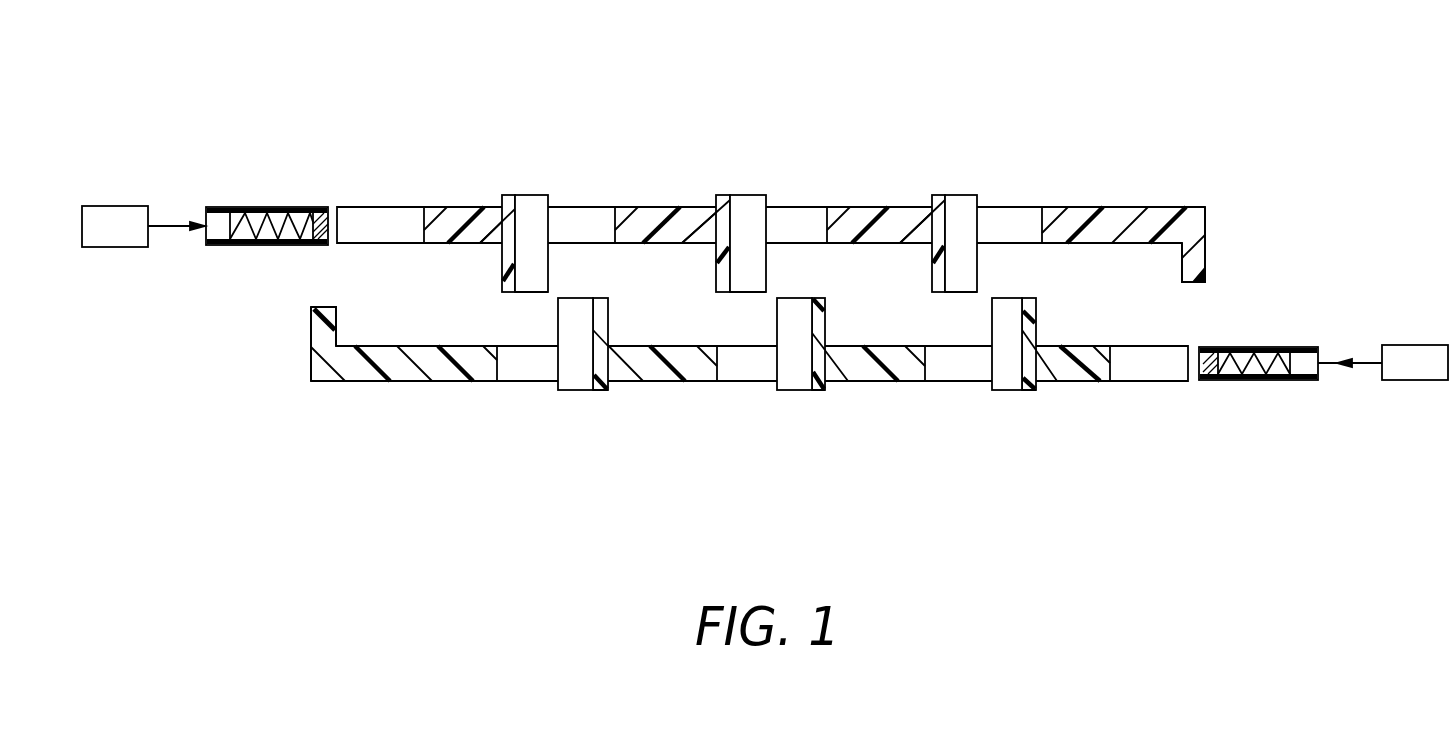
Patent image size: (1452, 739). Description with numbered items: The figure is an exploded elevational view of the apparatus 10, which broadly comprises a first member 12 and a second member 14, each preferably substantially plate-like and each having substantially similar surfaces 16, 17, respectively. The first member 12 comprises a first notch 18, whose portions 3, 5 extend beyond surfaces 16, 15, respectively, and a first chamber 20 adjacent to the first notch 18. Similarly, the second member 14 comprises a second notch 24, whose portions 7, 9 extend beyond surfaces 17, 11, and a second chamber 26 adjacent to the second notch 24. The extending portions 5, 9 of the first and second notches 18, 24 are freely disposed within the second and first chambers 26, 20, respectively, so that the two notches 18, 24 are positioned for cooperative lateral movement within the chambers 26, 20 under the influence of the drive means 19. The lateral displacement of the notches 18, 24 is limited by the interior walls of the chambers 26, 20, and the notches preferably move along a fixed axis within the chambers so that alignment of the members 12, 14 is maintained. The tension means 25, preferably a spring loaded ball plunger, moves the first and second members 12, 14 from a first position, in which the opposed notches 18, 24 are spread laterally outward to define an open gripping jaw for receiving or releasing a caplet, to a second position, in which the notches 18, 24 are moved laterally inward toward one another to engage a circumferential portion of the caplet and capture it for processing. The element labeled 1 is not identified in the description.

The first shaft 1 is at (378, 207).
The extending portion of first notch 3 is at (548, 195).
The extending portion of first notch 5 is at (552, 267).
The extending portion of second notch 7 is at (607, 383).
The extending portion of second notch 9 is at (827, 320).
The apparatus 10 is at (1128, 98).
The surface 11 is at (653, 346).
The first member 12 is at (1205, 230).
The second member 14 is at (311, 347).
The surface 15 is at (455, 243).
The surface 16 is at (452, 207).
The surface 17 is at (430, 382).
The first notch 18 is at (533, 195).
The drive means 19 is at (107, 248).
The first chamber 20 is at (597, 213).
The second notch 24 is at (570, 390).
The tension means 25 is at (250, 248).
The second chamber 26 is at (530, 357).